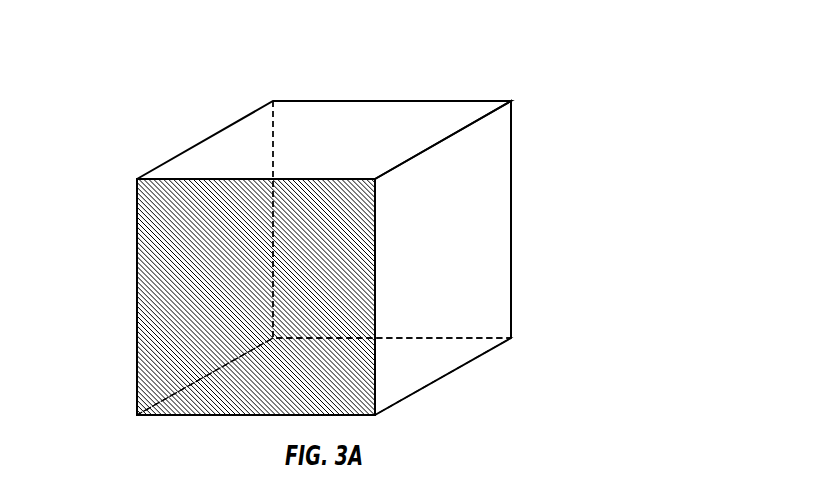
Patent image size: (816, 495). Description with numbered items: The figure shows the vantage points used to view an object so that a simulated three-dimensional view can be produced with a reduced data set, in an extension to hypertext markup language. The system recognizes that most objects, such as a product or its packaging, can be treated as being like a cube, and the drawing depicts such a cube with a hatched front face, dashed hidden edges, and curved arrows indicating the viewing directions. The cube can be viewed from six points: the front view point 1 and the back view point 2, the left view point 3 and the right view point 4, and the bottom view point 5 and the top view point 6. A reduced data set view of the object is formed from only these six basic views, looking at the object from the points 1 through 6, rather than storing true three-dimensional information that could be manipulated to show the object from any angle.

The front view point 1 is at (250, 283).
The back view point 2 is at (390, 124).
The left view point 3 is at (210, 160).
The right view point 4 is at (435, 168).
The bottom view point 5 is at (398, 383).
The top view point 6 is at (317, 142).